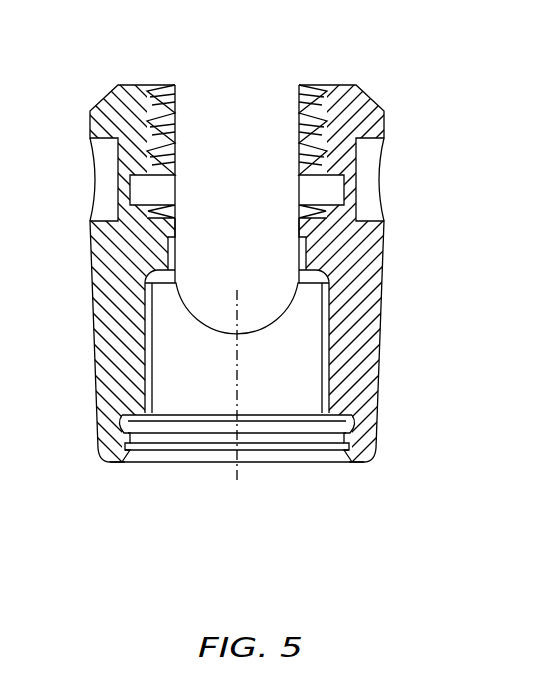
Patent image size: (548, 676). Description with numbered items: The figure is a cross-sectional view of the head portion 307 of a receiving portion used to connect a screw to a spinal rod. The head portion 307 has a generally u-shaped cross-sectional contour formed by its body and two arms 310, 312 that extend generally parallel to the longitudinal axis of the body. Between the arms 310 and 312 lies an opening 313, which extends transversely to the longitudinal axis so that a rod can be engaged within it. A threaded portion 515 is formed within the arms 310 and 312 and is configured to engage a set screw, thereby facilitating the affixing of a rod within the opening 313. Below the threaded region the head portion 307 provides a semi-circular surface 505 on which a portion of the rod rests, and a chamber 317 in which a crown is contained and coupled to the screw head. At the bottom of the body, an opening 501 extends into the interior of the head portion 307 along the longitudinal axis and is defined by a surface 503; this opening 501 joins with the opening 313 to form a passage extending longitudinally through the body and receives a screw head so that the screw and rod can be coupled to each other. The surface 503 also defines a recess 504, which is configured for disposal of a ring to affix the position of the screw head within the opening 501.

The head portion 307 is at (446, 46).
The arm 310 is at (380, 118).
The arm 312 is at (88, 122).
The opening 313 is at (245, 147).
The threaded portion 515 is at (180, 94).
The semi-circular surface 505 is at (275, 318).
The chamber 317 is at (290, 377).
The opening 501 is at (184, 478).
The surface 503 is at (352, 424).
The recess 504 is at (120, 431).